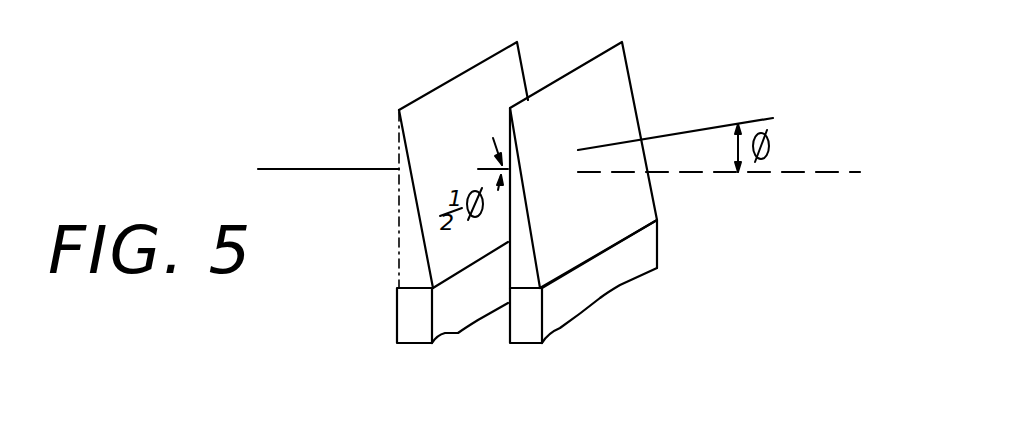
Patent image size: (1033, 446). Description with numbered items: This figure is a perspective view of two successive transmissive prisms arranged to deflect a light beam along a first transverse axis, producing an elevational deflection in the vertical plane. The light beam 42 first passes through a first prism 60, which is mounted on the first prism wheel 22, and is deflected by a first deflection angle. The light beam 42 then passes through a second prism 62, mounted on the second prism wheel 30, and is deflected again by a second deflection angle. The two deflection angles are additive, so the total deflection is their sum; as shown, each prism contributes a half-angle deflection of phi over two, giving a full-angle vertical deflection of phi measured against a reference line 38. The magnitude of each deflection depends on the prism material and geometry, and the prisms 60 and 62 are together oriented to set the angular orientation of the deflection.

The first prism 60 is at (447, 81).
The second prism 62 is at (598, 56).
The light beam 42 is at (298, 168).
The reference axis 38 is at (700, 173).
The second prism wheel 30 is at (590, 290).
The first prism wheel 22 is at (462, 310).